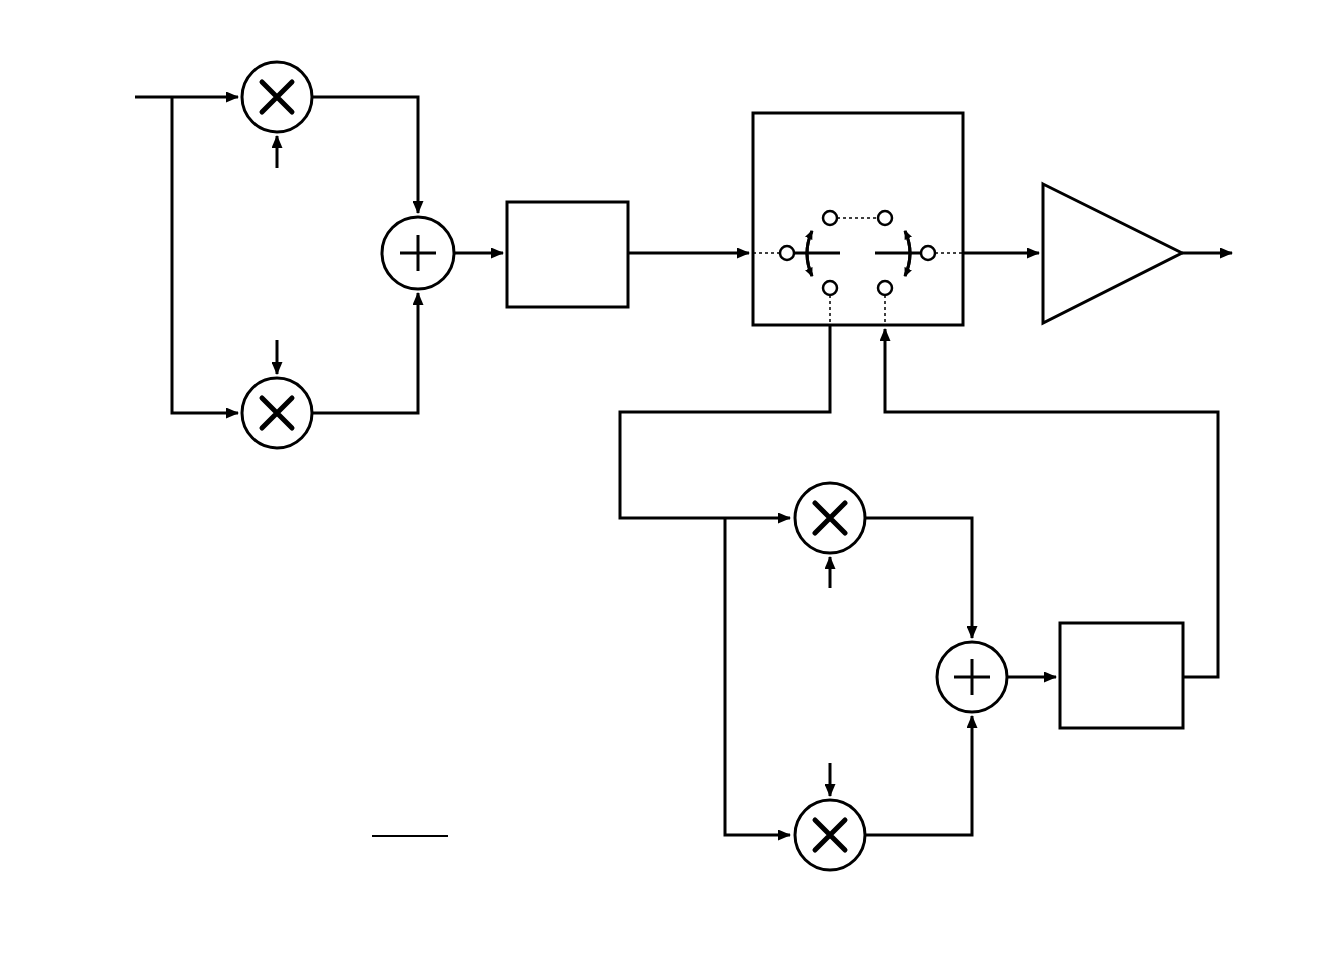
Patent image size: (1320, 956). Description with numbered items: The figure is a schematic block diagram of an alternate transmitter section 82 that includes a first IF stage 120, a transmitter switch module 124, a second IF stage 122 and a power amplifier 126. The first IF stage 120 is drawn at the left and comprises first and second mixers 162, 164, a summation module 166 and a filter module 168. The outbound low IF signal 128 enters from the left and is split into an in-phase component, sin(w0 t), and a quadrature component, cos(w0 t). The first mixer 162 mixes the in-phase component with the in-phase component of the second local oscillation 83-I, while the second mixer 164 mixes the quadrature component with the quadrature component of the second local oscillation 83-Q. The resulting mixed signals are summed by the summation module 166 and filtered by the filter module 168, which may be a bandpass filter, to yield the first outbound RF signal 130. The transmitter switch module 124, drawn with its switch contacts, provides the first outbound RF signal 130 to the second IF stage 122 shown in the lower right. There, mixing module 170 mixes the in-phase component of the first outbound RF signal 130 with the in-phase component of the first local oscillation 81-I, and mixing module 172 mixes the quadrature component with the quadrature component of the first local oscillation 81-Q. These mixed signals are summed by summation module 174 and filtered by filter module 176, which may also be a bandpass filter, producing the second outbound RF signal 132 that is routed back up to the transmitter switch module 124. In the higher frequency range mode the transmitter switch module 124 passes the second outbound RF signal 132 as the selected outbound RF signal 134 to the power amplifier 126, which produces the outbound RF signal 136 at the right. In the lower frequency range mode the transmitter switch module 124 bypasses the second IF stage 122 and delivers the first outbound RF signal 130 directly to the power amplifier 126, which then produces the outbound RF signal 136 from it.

The outbound low IF signal 128 is at (154, 232).
The first mixer 162 is at (277, 83).
The second mixer 164 is at (277, 427).
The in-phase component of second local oscillation 83-I is at (277, 183).
The quadrature component of second local oscillation 83-Q is at (277, 328).
The summation module 166 is at (407, 255).
The filter module 168 is at (628, 254).
The first outbound RF signal 130 is at (675, 244).
The transmitter switch module 124 is at (858, 219).
The selected outbound RF signal 134 is at (988, 244).
The power amplifier 126 is at (1112, 253).
The outbound RF signal 136 is at (1235, 252).
The second outbound RF signal 132 is at (1051, 503).
The mixing module 170 is at (799, 546).
The mixing module 172 is at (797, 807).
The in-phase component of first local oscillation 81-I is at (830, 603).
The quadrature component of first local oscillation 81-Q is at (830, 750).
The summation module 174 is at (996, 661).
The filter module 176 is at (1121, 675).
The first IF stage 120 is at (426, 553).
The second IF stage 122 is at (1270, 834).
The transmitter section 82 is at (288, 866).